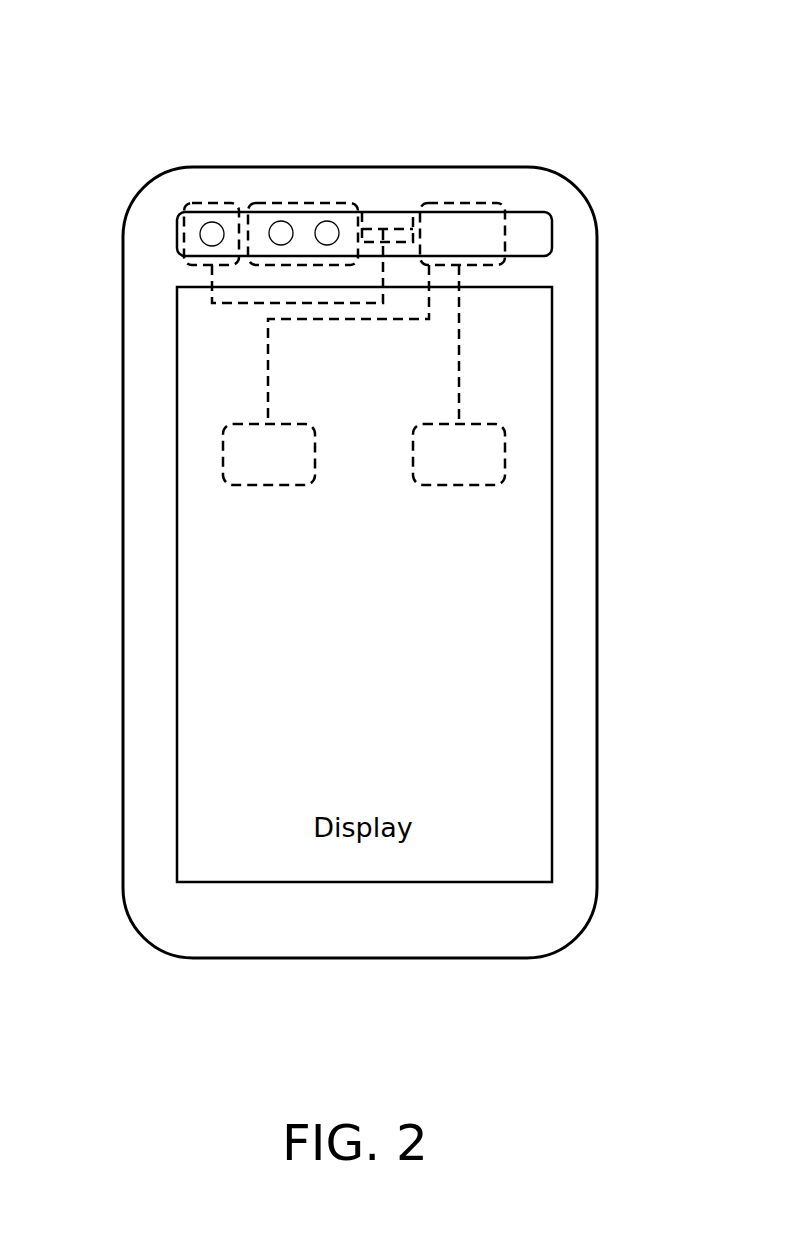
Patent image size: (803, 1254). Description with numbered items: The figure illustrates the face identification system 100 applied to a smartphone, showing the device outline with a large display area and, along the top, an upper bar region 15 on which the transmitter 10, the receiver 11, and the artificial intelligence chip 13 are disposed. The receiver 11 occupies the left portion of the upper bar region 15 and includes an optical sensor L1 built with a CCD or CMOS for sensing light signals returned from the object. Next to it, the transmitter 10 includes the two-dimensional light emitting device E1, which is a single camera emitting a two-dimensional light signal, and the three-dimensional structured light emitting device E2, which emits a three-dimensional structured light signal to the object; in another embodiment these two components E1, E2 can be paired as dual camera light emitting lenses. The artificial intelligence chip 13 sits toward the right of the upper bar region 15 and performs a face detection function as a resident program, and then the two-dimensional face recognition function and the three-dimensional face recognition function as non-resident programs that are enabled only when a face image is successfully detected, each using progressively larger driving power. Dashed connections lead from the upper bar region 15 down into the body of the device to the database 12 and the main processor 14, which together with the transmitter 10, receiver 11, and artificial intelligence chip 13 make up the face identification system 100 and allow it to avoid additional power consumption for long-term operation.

The face identification system 100 is at (587, 84).
The transmitter 10 is at (297, 178).
The receiver 11 is at (150, 198).
The database 12 is at (223, 453).
The artificial intelligence chip 13 is at (458, 203).
The main processor 14 is at (505, 455).
The upper bar region 15 is at (555, 233).
The optical sensor L1 is at (207, 235).
The 2D light emitting device E1 is at (283, 223).
The 3D structured light emitting device E2 is at (332, 224).